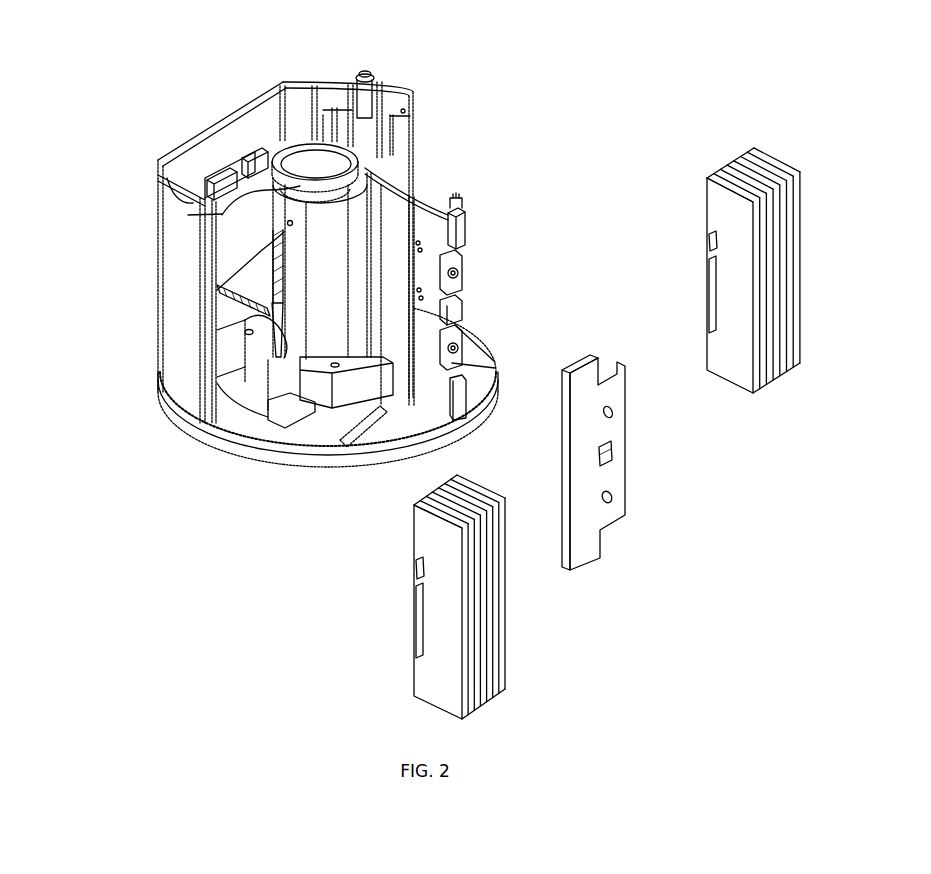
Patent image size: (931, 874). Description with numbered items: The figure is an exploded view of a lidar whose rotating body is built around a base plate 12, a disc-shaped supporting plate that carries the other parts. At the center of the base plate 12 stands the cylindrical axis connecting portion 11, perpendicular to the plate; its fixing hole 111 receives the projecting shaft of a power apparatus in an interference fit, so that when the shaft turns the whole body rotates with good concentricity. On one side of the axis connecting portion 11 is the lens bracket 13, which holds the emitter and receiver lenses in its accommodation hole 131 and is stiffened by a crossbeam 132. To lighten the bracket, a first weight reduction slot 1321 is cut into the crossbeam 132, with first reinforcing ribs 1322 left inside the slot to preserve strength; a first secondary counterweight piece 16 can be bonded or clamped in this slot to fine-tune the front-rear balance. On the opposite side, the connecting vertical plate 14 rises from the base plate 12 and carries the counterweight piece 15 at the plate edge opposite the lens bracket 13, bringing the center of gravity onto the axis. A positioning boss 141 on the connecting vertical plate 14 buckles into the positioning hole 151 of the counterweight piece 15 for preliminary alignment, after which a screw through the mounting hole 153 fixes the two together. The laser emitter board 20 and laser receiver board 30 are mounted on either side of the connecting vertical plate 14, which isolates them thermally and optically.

The axis connecting portion 11 is at (377, 153).
The fixing hole 111 is at (323, 180).
The base plate 12 is at (333, 430).
The lens bracket 13 is at (190, 143).
The accommodation hole 131 is at (238, 245).
The crossbeam 132 is at (217, 215).
The first weight reduction slot 1321 is at (250, 153).
The first reinforcing ribs 1322 is at (200, 190).
The connecting vertical plate 14 is at (427, 218).
The positioning boss 141 is at (452, 317).
The counterweight piece 15 is at (625, 393).
The positioning hole 151 is at (607, 455).
The mounting hole 153 is at (613, 495).
The first secondary counterweight piece 16 is at (213, 180).
The laser emitter board 20 is at (432, 665).
The laser receiver board 30 is at (708, 247).